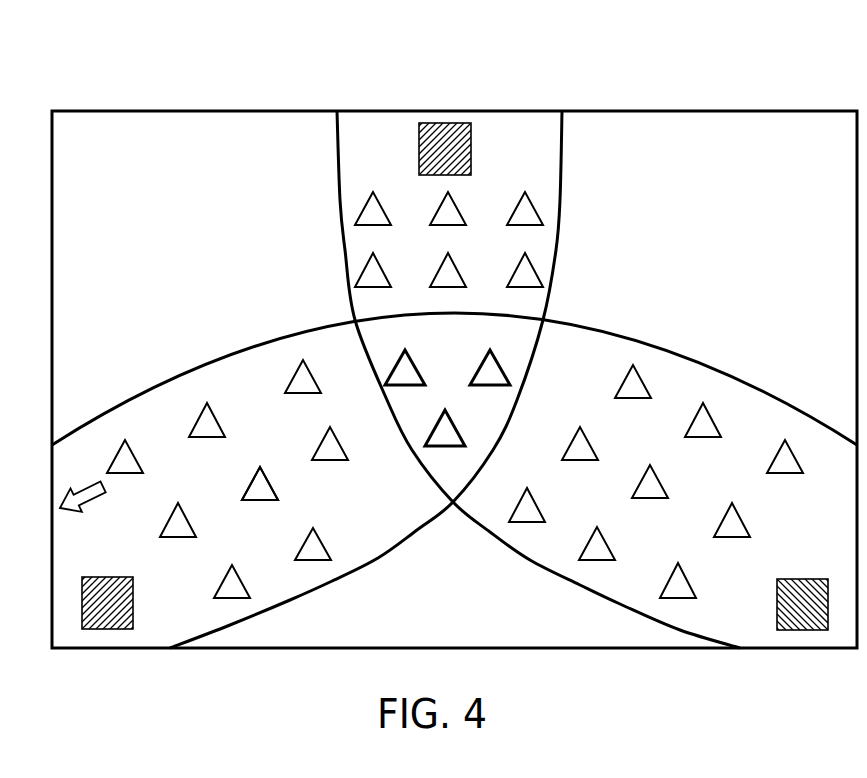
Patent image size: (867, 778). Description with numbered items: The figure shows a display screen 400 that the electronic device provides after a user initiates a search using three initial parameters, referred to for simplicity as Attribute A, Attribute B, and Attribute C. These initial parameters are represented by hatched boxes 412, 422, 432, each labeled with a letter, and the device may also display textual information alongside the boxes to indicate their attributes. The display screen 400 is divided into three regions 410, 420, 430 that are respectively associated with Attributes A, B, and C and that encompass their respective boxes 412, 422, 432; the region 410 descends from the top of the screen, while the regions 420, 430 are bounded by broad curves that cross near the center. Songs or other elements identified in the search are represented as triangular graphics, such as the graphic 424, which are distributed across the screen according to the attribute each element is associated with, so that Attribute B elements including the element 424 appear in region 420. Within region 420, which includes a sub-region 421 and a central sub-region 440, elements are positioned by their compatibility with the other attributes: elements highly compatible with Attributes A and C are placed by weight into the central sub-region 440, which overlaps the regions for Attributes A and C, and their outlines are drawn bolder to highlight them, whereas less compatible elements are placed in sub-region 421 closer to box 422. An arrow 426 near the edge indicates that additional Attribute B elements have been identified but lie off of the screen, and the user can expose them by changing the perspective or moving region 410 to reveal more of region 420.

The display screen 400 is at (614, 76).
The region 410 is at (558, 218).
The box 412 is at (471, 156).
The region 420 is at (378, 558).
The sub-region 421 is at (398, 513).
The box 422 is at (111, 577).
The graphic 424 is at (244, 483).
The arrow 426 is at (80, 483).
The region 430 is at (675, 360).
The box 432 is at (797, 579).
The central sub-region 440 is at (468, 353).